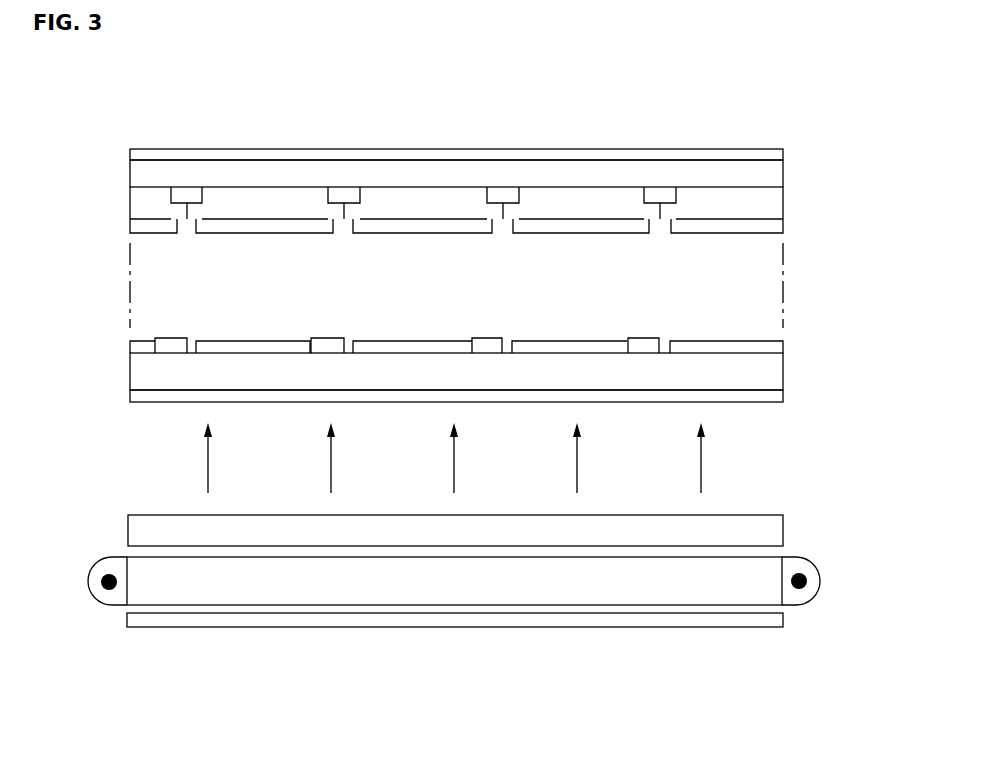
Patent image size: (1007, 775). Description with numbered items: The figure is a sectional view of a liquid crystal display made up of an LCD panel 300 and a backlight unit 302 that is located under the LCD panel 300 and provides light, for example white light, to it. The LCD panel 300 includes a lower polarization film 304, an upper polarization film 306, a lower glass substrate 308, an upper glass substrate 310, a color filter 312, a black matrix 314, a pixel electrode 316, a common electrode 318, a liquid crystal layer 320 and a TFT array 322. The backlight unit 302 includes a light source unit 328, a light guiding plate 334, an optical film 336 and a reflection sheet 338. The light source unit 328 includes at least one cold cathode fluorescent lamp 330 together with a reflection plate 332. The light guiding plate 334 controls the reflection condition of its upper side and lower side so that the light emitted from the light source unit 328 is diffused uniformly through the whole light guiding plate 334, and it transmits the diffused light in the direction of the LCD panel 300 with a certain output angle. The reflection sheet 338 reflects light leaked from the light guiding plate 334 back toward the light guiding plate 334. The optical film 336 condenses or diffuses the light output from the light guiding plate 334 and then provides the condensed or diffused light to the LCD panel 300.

The LCD panel 300 is at (461, 274).
The backlight unit 302 is at (458, 565).
The lower polarization film 304 is at (395, 402).
The upper polarization film 306 is at (188, 153).
The lower glass substrate 308 is at (267, 390).
The upper glass substrate 310 is at (311, 169).
The color filter 312 is at (237, 193).
The black matrix 314 is at (505, 194).
The pixel electrode 316 is at (233, 343).
The common electrode 318 is at (210, 235).
The liquid crystal layer 320 is at (775, 292).
The TFT array 322 is at (168, 342).
The light source unit 328 is at (107, 540).
The cold cathode fluorescent lamp 330 is at (109, 590).
The reflection plate 332 is at (821, 583).
The light guiding plate 334 is at (568, 600).
The optical film 336 is at (150, 523).
The reflection sheet 338 is at (405, 620).